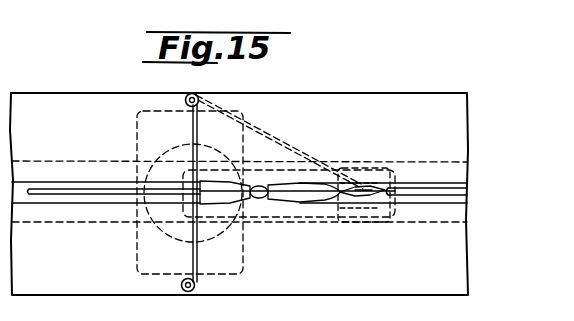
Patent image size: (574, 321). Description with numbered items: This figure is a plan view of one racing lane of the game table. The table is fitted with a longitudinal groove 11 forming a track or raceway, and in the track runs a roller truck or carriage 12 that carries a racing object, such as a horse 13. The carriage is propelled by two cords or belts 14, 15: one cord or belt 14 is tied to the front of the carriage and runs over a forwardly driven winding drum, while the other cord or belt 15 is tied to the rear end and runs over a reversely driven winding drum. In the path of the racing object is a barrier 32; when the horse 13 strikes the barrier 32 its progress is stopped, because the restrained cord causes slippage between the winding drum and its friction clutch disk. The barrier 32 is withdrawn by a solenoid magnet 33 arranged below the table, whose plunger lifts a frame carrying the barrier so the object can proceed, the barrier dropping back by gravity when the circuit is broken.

The longitudinal groove 11 is at (97, 200).
The roller truck or carriage 12 is at (377, 228).
The horse 13 is at (313, 197).
The cord or belt 14 is at (43, 190).
The cord or belt 15 is at (411, 185).
The barrier 32 is at (295, 146).
The solenoid magnet 33 is at (163, 152).